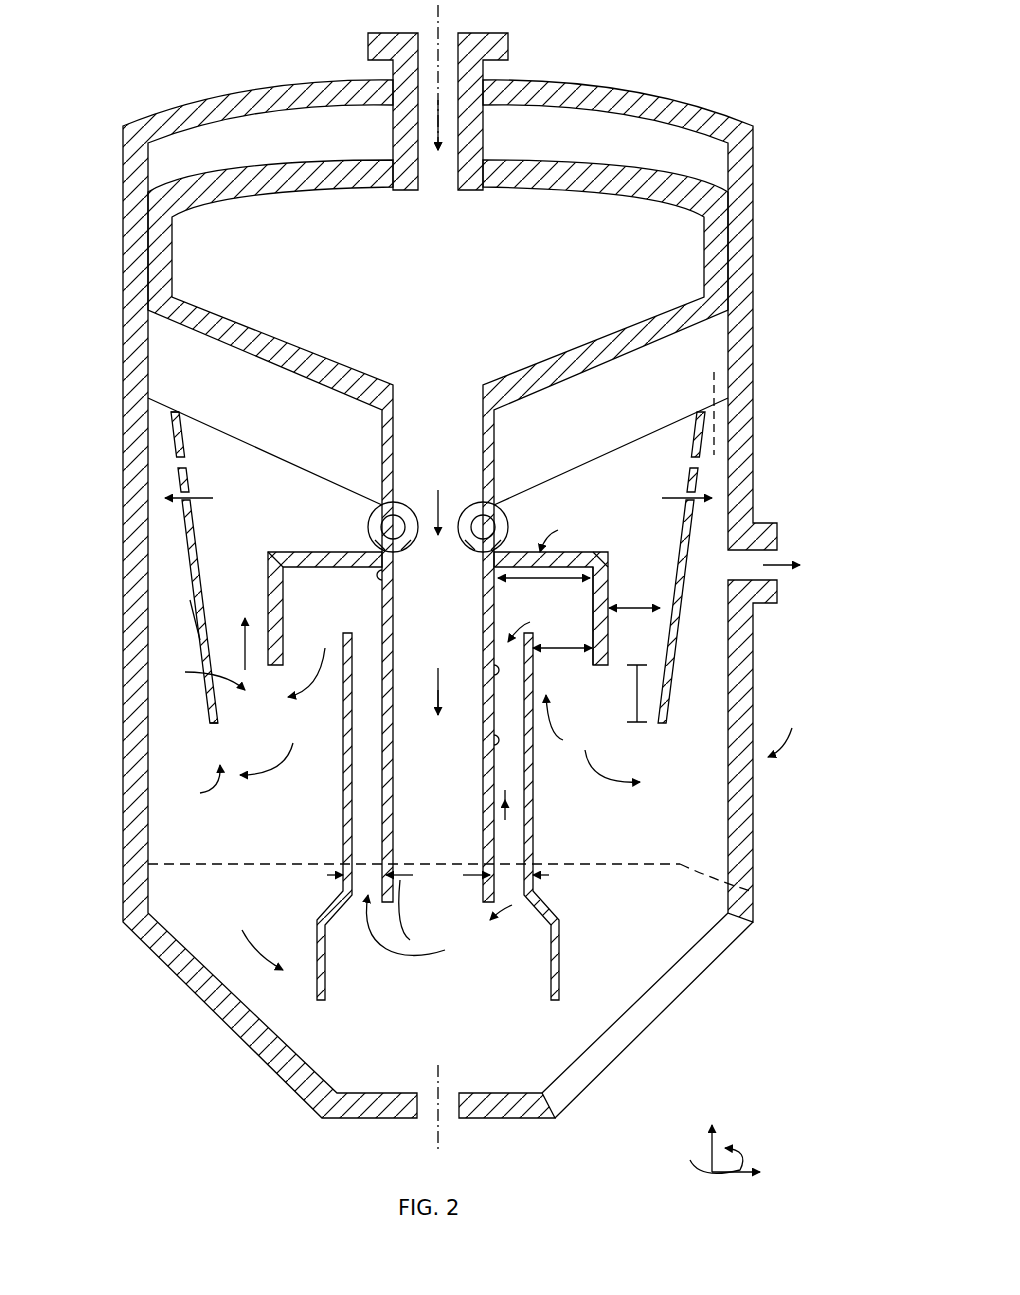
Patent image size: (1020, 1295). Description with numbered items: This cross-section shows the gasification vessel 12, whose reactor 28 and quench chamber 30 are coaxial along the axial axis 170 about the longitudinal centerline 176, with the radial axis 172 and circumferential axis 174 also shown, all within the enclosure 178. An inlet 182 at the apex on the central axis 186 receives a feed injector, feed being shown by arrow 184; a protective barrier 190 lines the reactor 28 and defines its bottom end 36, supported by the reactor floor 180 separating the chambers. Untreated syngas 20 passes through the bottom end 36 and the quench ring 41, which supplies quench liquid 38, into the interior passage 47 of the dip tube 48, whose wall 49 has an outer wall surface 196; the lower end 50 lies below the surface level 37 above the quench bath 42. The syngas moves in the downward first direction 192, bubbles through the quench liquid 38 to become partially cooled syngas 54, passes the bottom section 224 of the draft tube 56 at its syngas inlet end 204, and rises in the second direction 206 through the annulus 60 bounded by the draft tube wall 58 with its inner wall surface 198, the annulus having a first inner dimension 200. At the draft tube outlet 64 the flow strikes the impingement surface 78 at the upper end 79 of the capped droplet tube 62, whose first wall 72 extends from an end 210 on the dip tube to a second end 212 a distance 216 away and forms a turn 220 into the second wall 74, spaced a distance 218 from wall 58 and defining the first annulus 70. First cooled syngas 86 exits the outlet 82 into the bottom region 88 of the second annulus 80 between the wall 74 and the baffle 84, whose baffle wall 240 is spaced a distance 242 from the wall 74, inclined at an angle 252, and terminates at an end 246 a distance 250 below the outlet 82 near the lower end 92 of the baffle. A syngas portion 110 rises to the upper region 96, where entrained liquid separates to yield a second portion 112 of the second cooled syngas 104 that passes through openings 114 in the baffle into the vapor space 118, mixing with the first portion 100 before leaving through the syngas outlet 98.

The gasification vessel 12 is at (182, 85).
The untreated syngas 20 is at (440, 500).
The reactor 28 is at (439, 240).
The quench chamber 30 is at (790, 729).
The bottom end 36 is at (438, 433).
The surface level 37 is at (755, 890).
The quench liquid 38 is at (508, 1066).
The quench ring 41 is at (495, 525).
The quench bath 42 is at (607, 1010).
The interior passage 47 is at (439, 618).
The dip tube 48 is at (440, 672).
The wall of the dip tube 49 is at (492, 800).
The lower end of the dip tube 50 is at (490, 910).
The partially cooled syngas 54 is at (410, 948).
The draft tube 56 is at (533, 835).
The wall of the draft tube 58 is at (343, 828).
The annulus of the draft tube 60 is at (340, 845).
The capped droplet tube 62 is at (560, 552).
The draft tube outlet 64 is at (535, 621).
The first annulus 70 is at (326, 605).
The first wall 72 is at (332, 552).
The second wall 74 is at (608, 580).
The impingement surface 78 is at (358, 578).
The upper end of the capped droplet tube 79 is at (563, 528).
The second annulus 80 is at (233, 568).
The outlet of the capped droplet tube 82 is at (569, 722).
The baffle 84 is at (187, 545).
The first cooled syngas 86 is at (315, 695).
The bottom region of the second annulus 88 is at (200, 676).
The lower end of the baffle 92 is at (194, 784).
The upper region of the second annulus 96 is at (272, 492).
The syngas outlet 98 is at (768, 523).
The first portion of the second cooled syngas 100 is at (272, 775).
The second cooled syngas 104 is at (770, 575).
The syngas portion 110 is at (242, 645).
The second portion of the second cooled syngas 112 is at (205, 498).
The openings 114 is at (185, 447).
The vapor space 118 is at (703, 695).
The axial axis 170 is at (716, 1145).
The radial axis 172 is at (738, 1176).
The circumferential axis 174 is at (690, 1167).
The longitudinal centerline 176 is at (692, 450).
The enclosure 178 is at (120, 440).
The reactor floor 180 is at (728, 395).
The inlet 182 is at (500, 55).
The feedstock supply arrow 184 is at (443, 120).
The central axis 186 is at (438, 22).
The protective barrier 190 is at (250, 352).
The first direction 192 is at (436, 715).
The outer wall surface 196 is at (490, 742).
The inner wall surface 198 is at (525, 868).
The first inner dimension 200 is at (413, 910).
The syngas inlet end 204 is at (535, 900).
The second direction 206 is at (385, 855).
The end of the first wall 210 is at (386, 578).
The second end of the first wall 212 is at (268, 552).
The distance 216 is at (543, 580).
The distance 218 is at (548, 652).
The turn 220 is at (612, 555).
The bottom section of the draft tube 224 is at (255, 938).
The baffle wall 240 is at (196, 640).
The distance 242 is at (635, 610).
The end of the baffle wall 246 is at (217, 730).
The distance 250 is at (630, 706).
The angle 252 is at (712, 388).